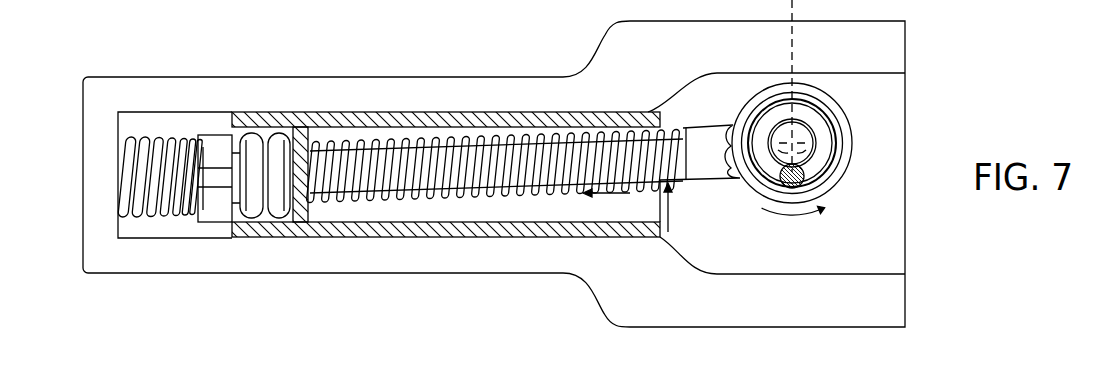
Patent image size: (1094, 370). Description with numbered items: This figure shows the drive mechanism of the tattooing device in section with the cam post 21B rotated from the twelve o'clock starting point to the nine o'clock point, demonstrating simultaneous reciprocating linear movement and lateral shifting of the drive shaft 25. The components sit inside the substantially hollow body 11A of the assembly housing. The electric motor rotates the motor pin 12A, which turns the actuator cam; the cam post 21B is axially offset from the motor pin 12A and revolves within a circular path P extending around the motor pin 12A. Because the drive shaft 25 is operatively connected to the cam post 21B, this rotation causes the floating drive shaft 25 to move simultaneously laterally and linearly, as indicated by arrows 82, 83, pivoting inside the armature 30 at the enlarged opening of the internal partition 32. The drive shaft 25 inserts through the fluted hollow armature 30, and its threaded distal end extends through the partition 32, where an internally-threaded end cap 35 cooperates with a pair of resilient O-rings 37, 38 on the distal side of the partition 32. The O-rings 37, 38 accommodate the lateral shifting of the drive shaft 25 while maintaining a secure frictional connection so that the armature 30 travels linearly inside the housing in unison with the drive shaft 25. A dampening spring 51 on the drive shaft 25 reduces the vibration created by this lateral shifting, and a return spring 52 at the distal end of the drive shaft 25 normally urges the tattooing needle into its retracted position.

The hollow body 11A is at (367, 77).
The motor pin 12A is at (820, 183).
The cam post 21B is at (805, 145).
The drive shaft 25 is at (477, 138).
The armature 30 is at (417, 112).
The internal partition 32 is at (318, 128).
The end cap 35 is at (210, 135).
The O-ring 37 is at (253, 213).
The O-ring 38 is at (283, 207).
The dampening spring 51 is at (605, 112).
The return spring 52 is at (142, 213).
The arrow 82 is at (668, 217).
The arrow 83 is at (608, 193).
The circular path P is at (765, 186).